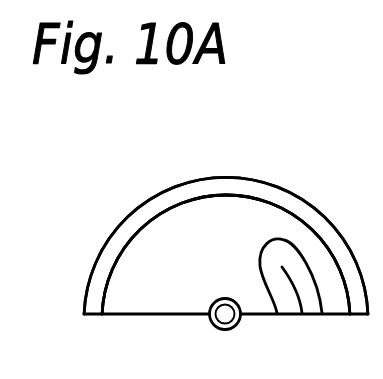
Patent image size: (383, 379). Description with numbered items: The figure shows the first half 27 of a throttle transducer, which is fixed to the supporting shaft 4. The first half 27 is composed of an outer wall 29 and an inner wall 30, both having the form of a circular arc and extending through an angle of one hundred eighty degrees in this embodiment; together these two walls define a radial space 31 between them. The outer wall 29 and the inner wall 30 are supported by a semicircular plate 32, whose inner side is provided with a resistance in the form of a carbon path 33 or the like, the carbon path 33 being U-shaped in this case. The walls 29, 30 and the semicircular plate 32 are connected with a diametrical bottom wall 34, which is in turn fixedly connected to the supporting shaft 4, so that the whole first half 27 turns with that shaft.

The first half 27 is at (117, 218).
The outer wall 29 is at (153, 193).
The inner wall 30 is at (176, 205).
The radial space 31 is at (208, 190).
The semicircular plate 32 is at (228, 230).
The carbon path 33 is at (309, 303).
The diametrical bottom wall 34 is at (127, 316).
The supporting shaft 4 is at (236, 324).